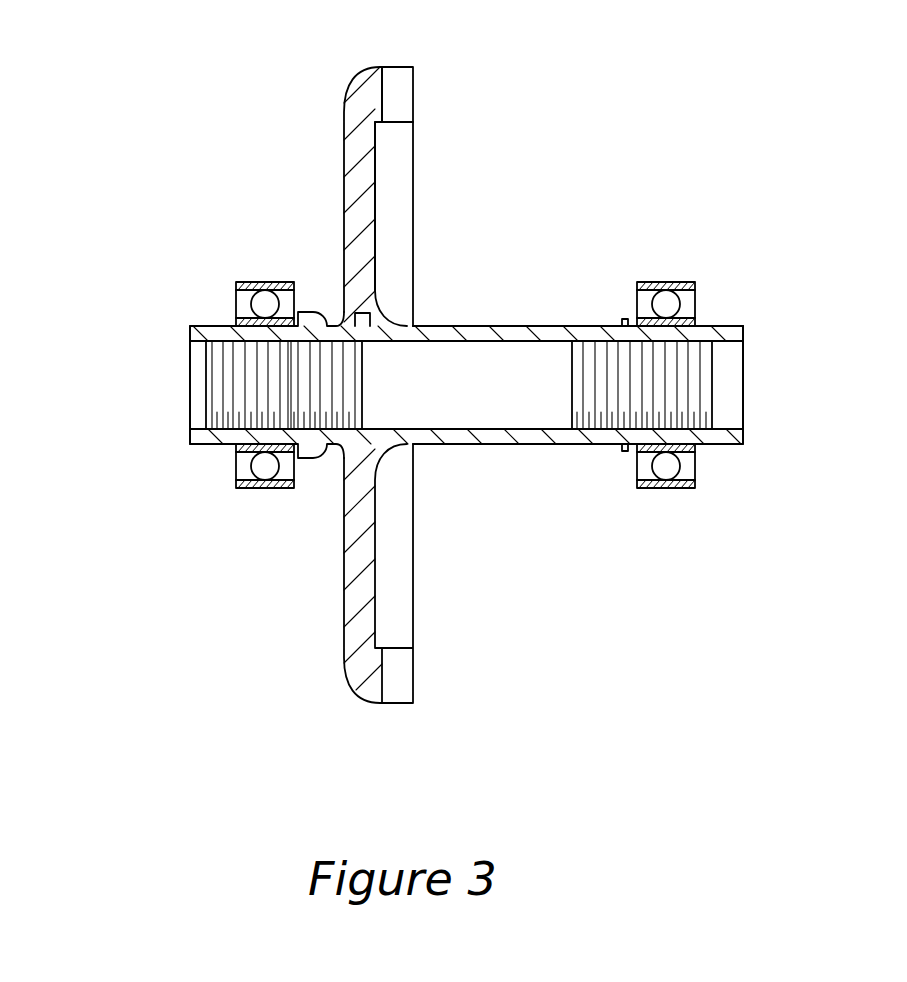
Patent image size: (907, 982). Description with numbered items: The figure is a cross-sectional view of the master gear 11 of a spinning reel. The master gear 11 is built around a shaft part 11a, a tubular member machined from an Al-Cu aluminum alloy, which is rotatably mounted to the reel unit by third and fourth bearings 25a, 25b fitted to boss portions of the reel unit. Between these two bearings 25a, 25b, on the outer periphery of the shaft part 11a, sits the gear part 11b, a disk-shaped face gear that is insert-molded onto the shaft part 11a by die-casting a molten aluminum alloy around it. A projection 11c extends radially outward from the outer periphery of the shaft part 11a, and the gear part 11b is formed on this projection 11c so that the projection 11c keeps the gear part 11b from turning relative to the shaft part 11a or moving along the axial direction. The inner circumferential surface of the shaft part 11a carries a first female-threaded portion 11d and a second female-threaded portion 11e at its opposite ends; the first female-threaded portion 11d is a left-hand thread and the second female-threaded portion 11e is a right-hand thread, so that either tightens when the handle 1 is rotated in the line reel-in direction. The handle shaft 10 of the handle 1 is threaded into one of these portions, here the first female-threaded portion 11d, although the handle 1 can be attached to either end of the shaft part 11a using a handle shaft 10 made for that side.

The handle 1 is at (468, 374).
The handle shaft 10 is at (216, 382).
The master gear 11 is at (493, 374).
The shaft part 11a is at (513, 326).
The gear part 11b is at (407, 170).
The projection 11c is at (363, 313).
The first female-threaded portion 11d is at (231, 432).
The second female-threaded portion 11e is at (705, 430).
The third bearing 25a is at (262, 282).
The fourth bearing 25b is at (663, 282).